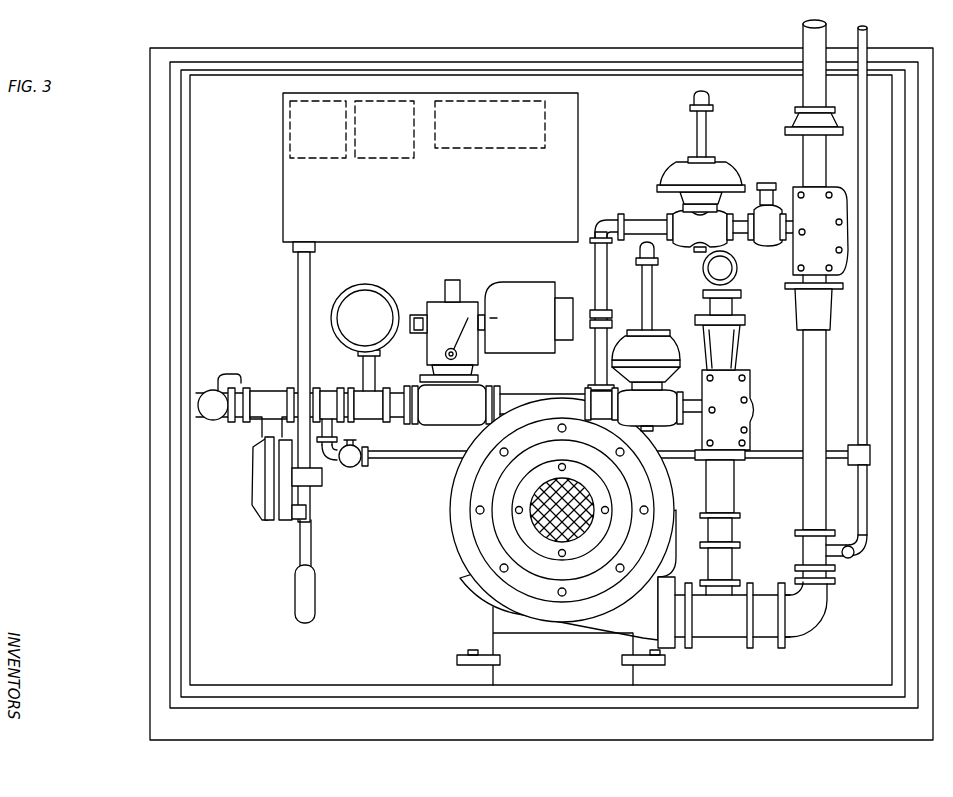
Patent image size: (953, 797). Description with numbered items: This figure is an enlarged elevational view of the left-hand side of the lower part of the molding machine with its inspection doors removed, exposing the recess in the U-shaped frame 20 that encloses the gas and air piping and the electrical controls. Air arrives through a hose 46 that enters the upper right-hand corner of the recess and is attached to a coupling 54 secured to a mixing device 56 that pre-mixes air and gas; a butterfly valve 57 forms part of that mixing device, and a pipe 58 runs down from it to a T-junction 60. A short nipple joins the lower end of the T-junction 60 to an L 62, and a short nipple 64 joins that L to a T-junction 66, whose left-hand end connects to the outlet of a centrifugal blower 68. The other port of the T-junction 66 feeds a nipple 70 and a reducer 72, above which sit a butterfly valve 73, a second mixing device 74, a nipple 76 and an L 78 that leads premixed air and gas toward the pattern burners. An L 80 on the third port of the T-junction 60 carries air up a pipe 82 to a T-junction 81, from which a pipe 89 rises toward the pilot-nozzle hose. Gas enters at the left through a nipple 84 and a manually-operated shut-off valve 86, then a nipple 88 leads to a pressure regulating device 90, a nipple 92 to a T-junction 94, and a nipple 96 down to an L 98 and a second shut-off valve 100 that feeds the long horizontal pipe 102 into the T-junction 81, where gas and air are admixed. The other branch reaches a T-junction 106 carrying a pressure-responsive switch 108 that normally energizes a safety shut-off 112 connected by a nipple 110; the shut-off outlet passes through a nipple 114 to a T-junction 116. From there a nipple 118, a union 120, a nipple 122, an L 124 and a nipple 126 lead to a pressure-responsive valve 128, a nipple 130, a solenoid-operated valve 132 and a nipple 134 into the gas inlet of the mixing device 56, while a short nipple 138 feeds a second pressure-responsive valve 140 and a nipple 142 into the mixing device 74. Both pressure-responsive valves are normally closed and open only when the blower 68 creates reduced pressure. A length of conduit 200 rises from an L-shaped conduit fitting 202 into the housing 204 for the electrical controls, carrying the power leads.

The U-shaped frame 20 is at (150, 556).
The hose 46 is at (802, 37).
The coupling 54 is at (797, 121).
The mixing device 56 is at (797, 262).
The butterfly valve 57 is at (800, 318).
The pipe 58 is at (803, 386).
The T-junction 60 is at (803, 547).
The L 62 is at (821, 611).
The short nipple 64 is at (772, 640).
The T-junction 66 is at (729, 640).
The centrifugal blower 68 is at (462, 576).
The nipple 70 is at (732, 568).
The reducer 72 is at (732, 530).
The butterfly valve 73 is at (733, 487).
The mixing device 74 is at (722, 432).
The nipple 76 is at (708, 303).
The L 78 is at (706, 270).
The L 80 is at (856, 558).
The T-junction 81 is at (851, 444).
The pipe 82 is at (858, 511).
The nipple 84 is at (208, 422).
The manually-operated shut-off valve 86 is at (231, 420).
The nipple 88 is at (255, 391).
The pipe 89 is at (868, 36).
The pressure regulating device 90 is at (259, 482).
The nipple 92 is at (306, 398).
The T-junction 94 is at (328, 398).
The nipple 96 is at (335, 432).
The L 98 is at (326, 464).
The manually-operated shut-off valve 100 is at (354, 469).
The pipe 102 is at (838, 451).
The T-junction 106 is at (381, 395).
The pressure-responsive switch 108 is at (378, 273).
The nipple 110 is at (398, 421).
The safety shut-off 112 is at (470, 300).
The nipple 114 is at (520, 396).
The T-junction 116 is at (594, 390).
The nipple 118 is at (595, 353).
The union 120 is at (609, 310).
The nipple 122 is at (596, 259).
The L 124 is at (603, 221).
The nipple 126 is at (637, 219).
The pressure-responsive valve 128 is at (680, 175).
The nipple 130 is at (742, 232).
The solenoid-operated valve 132 is at (759, 205).
The nipple 134 is at (790, 214).
The short nipple 138 is at (601, 406).
The pressure-responsive valve 140 is at (661, 342).
The nipple 142 is at (690, 412).
The length of conduit 200 is at (297, 286).
The L-shaped conduit fitting 202 is at (315, 592).
The housing 204 is at (393, 210).